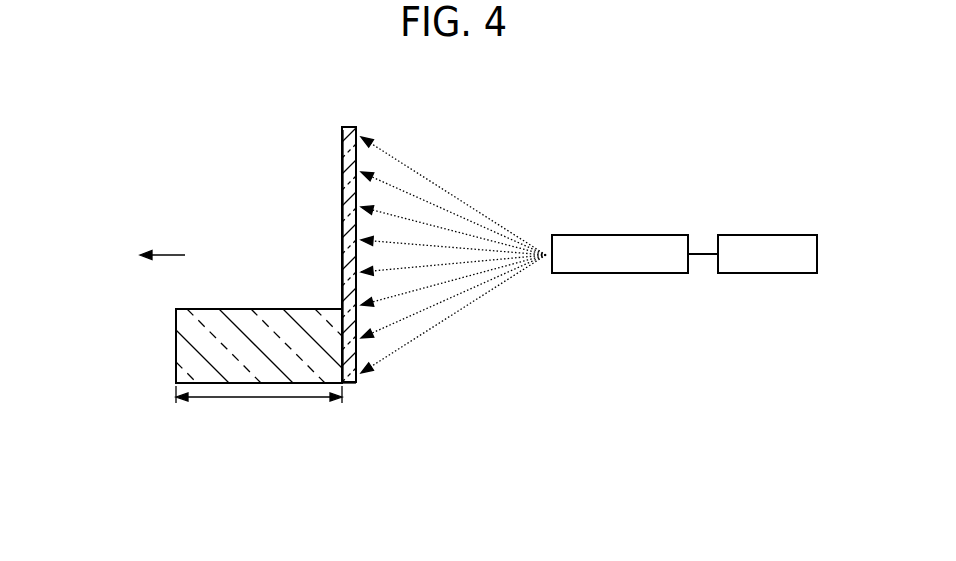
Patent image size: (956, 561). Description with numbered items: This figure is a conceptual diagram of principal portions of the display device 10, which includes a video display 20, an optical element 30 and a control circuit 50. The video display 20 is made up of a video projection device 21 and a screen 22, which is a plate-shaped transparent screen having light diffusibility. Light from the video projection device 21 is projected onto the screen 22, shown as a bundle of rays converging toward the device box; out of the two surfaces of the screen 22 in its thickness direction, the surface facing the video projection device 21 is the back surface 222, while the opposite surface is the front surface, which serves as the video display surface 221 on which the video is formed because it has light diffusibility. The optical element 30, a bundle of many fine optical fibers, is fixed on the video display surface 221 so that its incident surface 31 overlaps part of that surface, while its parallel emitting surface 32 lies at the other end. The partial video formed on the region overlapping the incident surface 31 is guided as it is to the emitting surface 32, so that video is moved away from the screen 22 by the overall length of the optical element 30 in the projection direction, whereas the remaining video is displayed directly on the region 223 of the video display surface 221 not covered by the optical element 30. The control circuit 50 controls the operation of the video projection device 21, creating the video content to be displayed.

The display device 10 is at (200, 140).
The video display 20 is at (542, 329).
The video projection device 21 is at (560, 277).
The screen 22 is at (356, 355).
The video display surface 221 is at (342, 145).
The back surface 222 is at (357, 153).
The region 223 is at (322, 128).
The optical element 30 is at (258, 307).
The incident surface 31 is at (355, 383).
The emitting surface 32 is at (176, 328).
The control circuit 50 is at (767, 235).